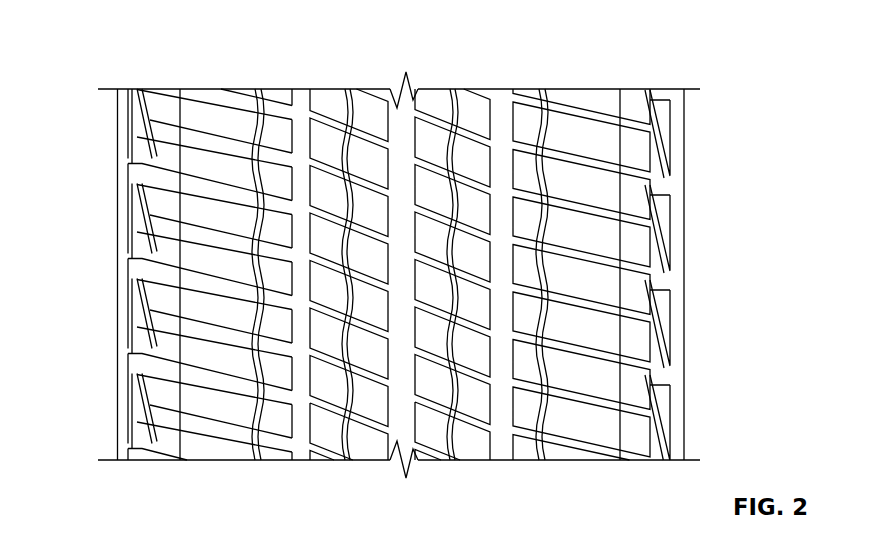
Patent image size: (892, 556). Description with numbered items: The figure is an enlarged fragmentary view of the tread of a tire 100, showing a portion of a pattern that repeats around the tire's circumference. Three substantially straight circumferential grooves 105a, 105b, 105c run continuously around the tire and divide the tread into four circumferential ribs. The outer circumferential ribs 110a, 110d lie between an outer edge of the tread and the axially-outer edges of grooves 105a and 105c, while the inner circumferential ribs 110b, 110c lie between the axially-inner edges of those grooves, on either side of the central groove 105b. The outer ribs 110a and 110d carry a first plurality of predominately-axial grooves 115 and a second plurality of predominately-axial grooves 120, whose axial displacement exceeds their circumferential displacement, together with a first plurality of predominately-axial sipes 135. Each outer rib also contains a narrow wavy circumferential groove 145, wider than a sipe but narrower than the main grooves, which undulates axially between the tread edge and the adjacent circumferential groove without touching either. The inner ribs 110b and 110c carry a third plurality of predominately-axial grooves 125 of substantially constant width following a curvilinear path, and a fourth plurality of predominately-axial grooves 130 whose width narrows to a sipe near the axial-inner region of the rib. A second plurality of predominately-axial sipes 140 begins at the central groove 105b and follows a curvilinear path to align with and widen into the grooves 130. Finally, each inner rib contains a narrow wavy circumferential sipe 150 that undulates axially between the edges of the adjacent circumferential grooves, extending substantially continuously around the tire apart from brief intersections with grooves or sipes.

The tire 100 is at (116, 36).
The circumferential groove 105a is at (290, 478).
The circumferential groove 105b is at (393, 482).
The circumferential groove 105c is at (502, 476).
The outer circumferential rib 110a is at (218, 72).
The inner circumferential rib 110b is at (333, 74).
The inner circumferential rib 110c is at (437, 74).
The outer circumferential rib 110d is at (575, 74).
The first plurality of predominately-axial grooves 115 is at (645, 230).
The second plurality of predominately-axial grooves 120 is at (645, 280).
The third plurality of predominately-axial grooves 125 is at (480, 342).
The fourth plurality of predominately-axial grooves 130 is at (480, 388).
The first plurality of predominately-axial sipes 135 is at (280, 115).
The second plurality of predominately-axial sipes 140 is at (362, 193).
The narrow wavy circumferential grooves 145 is at (262, 330).
The narrow wavy circumferential sipes 150 is at (335, 386).